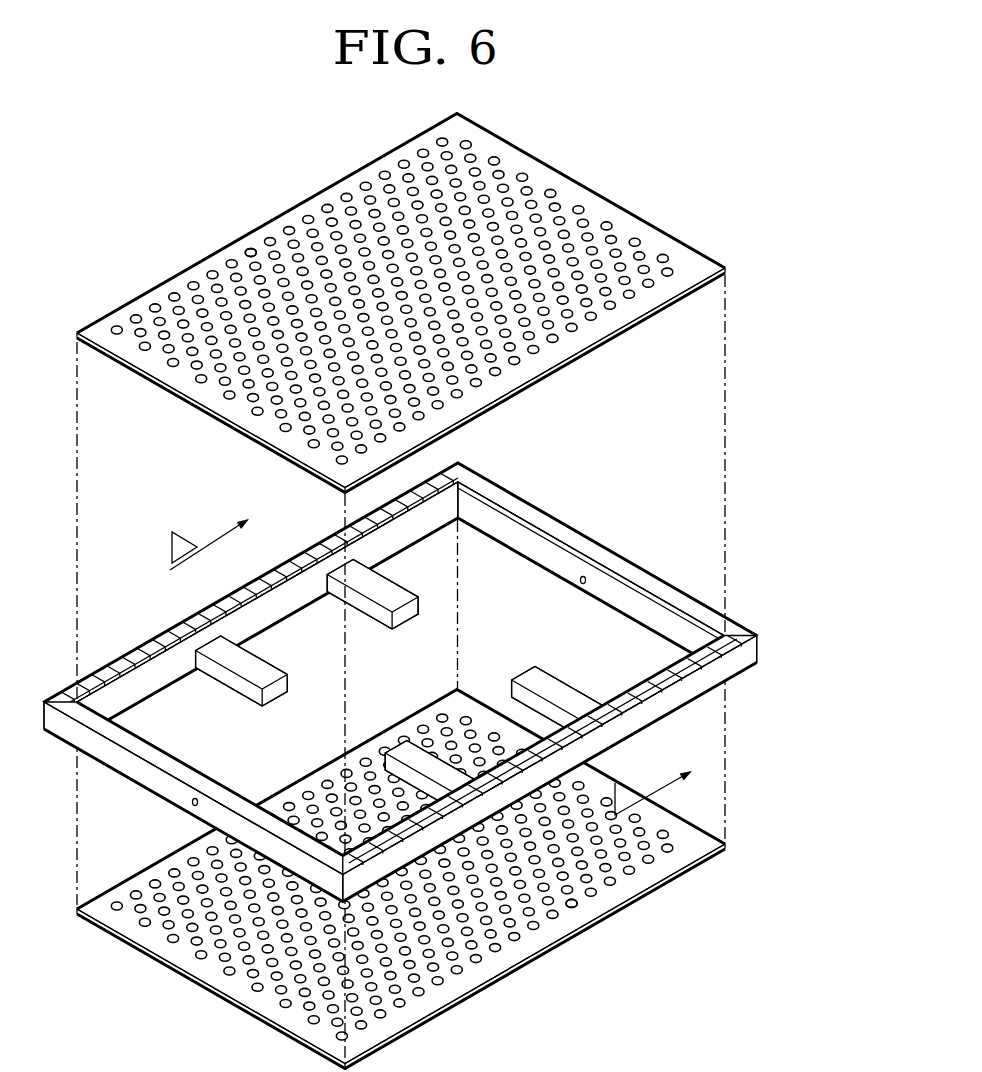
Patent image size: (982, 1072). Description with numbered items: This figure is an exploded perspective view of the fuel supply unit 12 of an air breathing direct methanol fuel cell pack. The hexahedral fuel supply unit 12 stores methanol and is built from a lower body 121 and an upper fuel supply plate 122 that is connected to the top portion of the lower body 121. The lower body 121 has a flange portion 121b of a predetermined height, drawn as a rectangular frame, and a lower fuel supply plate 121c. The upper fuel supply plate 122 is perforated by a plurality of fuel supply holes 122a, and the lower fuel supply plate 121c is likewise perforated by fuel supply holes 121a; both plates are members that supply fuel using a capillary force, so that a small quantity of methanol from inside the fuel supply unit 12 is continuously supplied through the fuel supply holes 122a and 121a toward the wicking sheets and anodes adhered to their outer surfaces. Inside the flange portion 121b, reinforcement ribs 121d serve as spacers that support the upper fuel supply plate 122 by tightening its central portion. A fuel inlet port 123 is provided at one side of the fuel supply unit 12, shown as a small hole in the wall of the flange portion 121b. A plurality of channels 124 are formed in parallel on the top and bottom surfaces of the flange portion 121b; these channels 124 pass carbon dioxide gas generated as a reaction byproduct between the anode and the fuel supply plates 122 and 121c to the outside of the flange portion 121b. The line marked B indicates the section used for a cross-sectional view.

The fuel supply unit 12 is at (767, 190).
The lower body 121 is at (578, 972).
The fuel supply holes 121a is at (580, 905).
The flange portion 121b is at (648, 571).
The lower fuel supply plate 121c is at (490, 981).
The reinforcement ribs 121d is at (402, 742).
The upper fuel supply plate 122 is at (328, 190).
The fuel supply holes 122a is at (250, 250).
The fuel inlet port 123 is at (582, 585).
The channels 124 is at (163, 648).